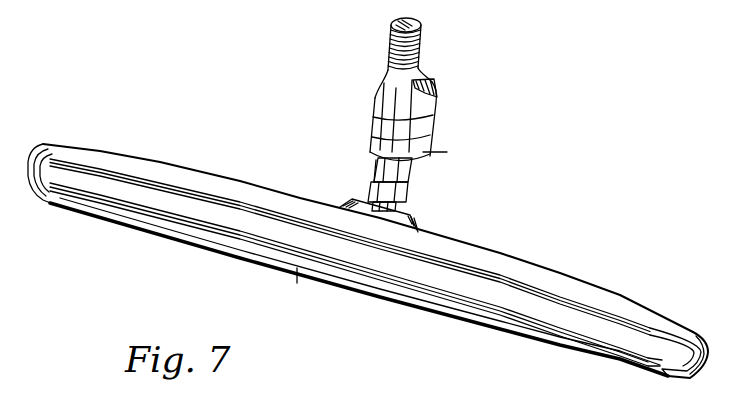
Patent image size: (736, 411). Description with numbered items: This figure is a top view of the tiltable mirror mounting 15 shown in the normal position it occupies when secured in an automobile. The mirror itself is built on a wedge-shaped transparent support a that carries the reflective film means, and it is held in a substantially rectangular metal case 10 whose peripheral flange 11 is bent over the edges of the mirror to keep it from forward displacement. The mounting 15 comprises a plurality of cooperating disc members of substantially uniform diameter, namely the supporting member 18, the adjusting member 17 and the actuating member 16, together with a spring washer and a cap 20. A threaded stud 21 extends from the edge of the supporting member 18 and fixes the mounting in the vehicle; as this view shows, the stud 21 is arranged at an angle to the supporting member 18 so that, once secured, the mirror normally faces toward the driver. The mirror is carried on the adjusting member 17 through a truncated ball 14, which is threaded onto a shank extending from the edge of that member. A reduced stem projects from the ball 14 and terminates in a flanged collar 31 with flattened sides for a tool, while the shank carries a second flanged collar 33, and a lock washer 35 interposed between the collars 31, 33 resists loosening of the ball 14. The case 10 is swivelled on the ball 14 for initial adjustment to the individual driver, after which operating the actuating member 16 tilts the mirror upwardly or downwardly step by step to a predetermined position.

The metal housing or case 10 is at (470, 257).
The peripheral flange 11 is at (692, 375).
The support of glass or other transparent material a is at (296, 287).
The truncated ball 14 is at (400, 212).
The tiltable mirror mounting 15 is at (386, 72).
The actuating member (disc member) 16 is at (434, 113).
The adjusting member (disc member) 17 is at (422, 88).
The supporting member (disc member) 18 is at (394, 112).
The cap 20 is at (388, 95).
The threaded stud 21 is at (418, 42).
The flanged collar 31 is at (407, 190).
The flanged collar 33 is at (393, 173).
The lock washer 35 is at (375, 174).